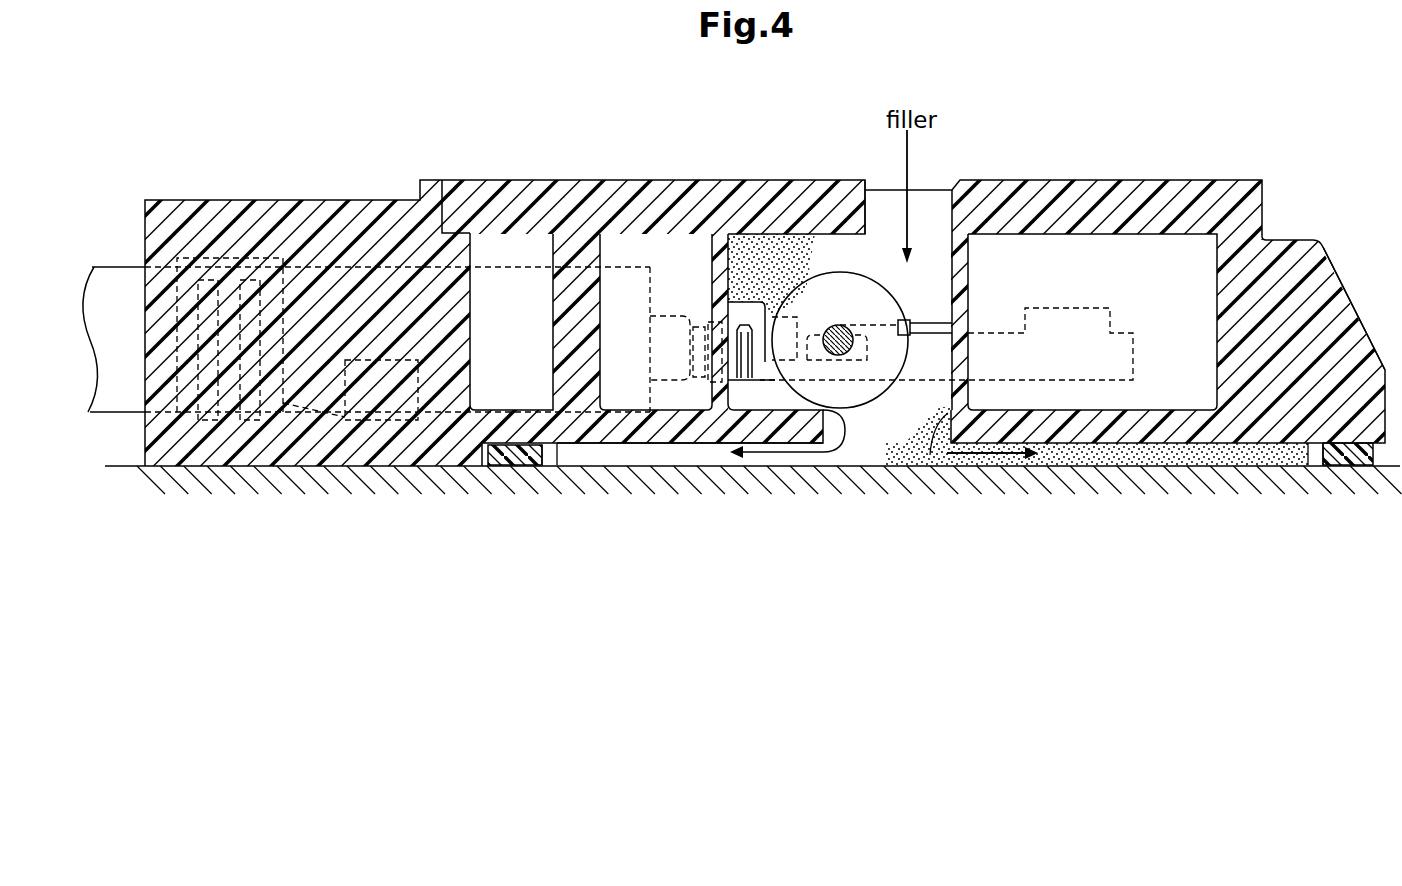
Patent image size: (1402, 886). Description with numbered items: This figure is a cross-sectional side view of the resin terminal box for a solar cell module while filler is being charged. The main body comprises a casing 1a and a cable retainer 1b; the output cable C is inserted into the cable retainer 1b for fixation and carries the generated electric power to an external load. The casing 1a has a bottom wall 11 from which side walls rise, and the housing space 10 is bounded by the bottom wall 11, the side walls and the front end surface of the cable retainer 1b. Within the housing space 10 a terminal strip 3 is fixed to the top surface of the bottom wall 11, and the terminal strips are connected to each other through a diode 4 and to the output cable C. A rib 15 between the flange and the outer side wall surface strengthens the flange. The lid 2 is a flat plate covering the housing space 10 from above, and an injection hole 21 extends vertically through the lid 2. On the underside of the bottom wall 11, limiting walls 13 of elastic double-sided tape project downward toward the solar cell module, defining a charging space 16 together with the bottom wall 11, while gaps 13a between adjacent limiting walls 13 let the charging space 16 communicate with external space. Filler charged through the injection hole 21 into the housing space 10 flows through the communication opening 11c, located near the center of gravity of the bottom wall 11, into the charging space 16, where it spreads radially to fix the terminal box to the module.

The casing 1a is at (1285, 222).
The cable retainer 1b is at (298, 193).
The lid 2 is at (1087, 188).
The terminal strip 3 is at (925, 342).
The diode 4 is at (827, 280).
The housing space 10 is at (770, 246).
The bottom wall 11 is at (772, 395).
The communication opening 11c is at (858, 442).
The limiting wall 13 is at (517, 462).
The gap 13a is at (548, 470).
The rib 15 is at (1335, 288).
The charging space 16 is at (769, 462).
The injection hole 21 is at (935, 198).
The output cable C is at (130, 395).